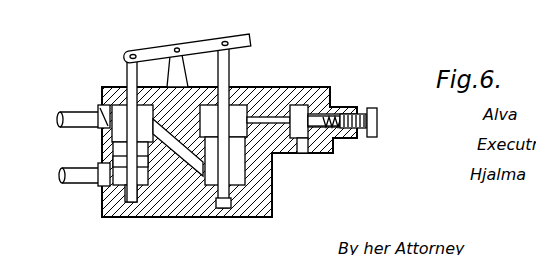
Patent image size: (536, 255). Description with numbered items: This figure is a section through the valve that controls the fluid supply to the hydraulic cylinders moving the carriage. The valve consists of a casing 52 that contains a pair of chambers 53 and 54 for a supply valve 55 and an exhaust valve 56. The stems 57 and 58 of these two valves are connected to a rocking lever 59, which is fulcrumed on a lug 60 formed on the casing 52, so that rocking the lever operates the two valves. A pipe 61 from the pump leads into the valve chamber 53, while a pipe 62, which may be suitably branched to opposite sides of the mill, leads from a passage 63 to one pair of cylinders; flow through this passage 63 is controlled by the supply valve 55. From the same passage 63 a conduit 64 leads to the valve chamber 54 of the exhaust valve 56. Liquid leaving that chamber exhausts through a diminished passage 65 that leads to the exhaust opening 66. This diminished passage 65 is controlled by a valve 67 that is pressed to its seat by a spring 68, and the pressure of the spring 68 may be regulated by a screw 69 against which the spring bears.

The casing 52 is at (180, 198).
The valve chamber 53 is at (118, 180).
The valve chamber 54 is at (240, 179).
The supply valve 55 is at (116, 160).
The exhaust valve 56 is at (240, 150).
The valve stem 57 is at (128, 65).
The valve stem 58 is at (232, 64).
The rocking lever 59 is at (155, 46).
The lug 60 is at (181, 66).
The pipe 61 is at (77, 175).
The pipe 62 is at (67, 112).
The passage 63 is at (102, 105).
The conduit 64 is at (196, 165).
The diminished passage 65 is at (279, 104).
The exhaust opening 66 is at (310, 148).
The valve 67 is at (317, 122).
The spring 68 is at (338, 118).
The screw 69 is at (378, 117).